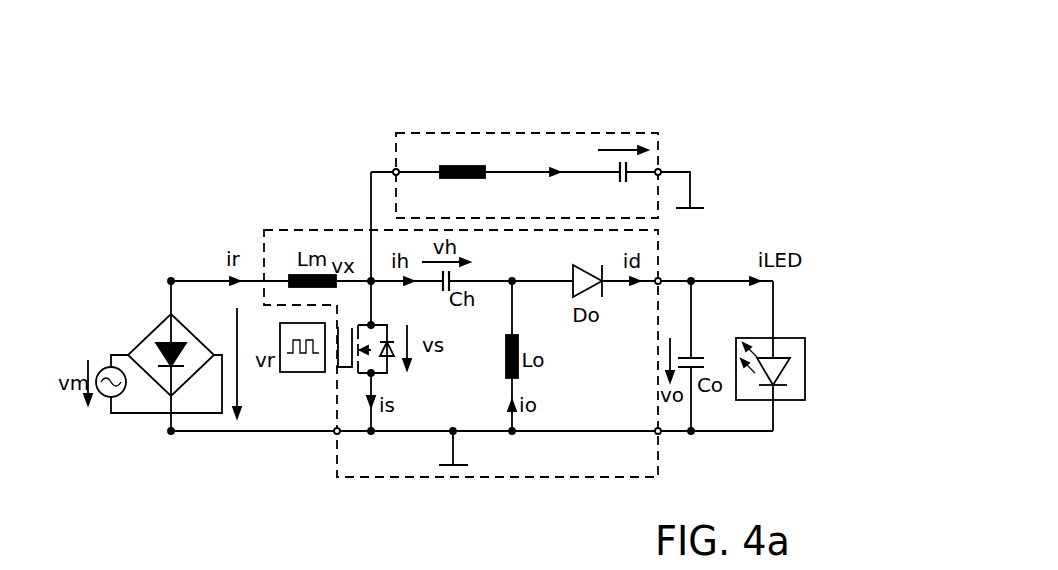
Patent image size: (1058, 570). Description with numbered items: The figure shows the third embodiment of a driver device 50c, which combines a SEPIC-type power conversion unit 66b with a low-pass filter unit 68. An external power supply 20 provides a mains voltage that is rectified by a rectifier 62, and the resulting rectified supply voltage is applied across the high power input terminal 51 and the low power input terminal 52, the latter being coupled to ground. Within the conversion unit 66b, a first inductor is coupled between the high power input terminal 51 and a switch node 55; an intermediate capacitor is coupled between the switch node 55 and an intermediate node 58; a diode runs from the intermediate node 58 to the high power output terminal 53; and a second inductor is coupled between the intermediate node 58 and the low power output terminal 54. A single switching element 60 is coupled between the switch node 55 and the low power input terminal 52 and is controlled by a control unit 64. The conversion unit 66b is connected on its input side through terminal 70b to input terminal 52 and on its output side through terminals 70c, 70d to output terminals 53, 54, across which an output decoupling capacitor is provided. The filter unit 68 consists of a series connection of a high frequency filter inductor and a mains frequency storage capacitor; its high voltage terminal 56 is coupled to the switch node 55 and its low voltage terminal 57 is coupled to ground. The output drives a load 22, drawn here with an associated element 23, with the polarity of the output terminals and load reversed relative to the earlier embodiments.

The external power supply 20 is at (103, 369).
The load 22 is at (782, 337).
The LED load module 23 is at (779, 369).
The driver device 50c is at (742, 72).
The high power input terminal 51 is at (166, 277).
The low power input terminal 52 is at (166, 436).
The high power output terminal 53 is at (693, 279).
The low power output terminal 54 is at (694, 434).
The switch node 55 is at (374, 284).
The high voltage terminal 56 is at (399, 170).
The low voltage terminal 57 is at (660, 170).
The intermediate node 58 is at (515, 283).
The switching element 60 is at (398, 377).
The rectifier 62 is at (146, 340).
The control unit 64 is at (283, 372).
The converter stage 66b is at (310, 229).
The filter unit 68 is at (575, 133).
The input terminal 70b is at (334, 434).
The output terminal 70c is at (660, 279).
The output terminal 70d is at (660, 434).